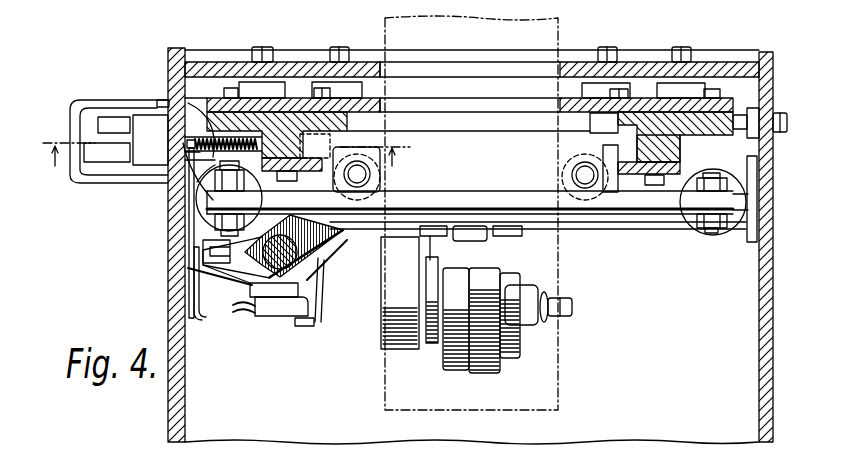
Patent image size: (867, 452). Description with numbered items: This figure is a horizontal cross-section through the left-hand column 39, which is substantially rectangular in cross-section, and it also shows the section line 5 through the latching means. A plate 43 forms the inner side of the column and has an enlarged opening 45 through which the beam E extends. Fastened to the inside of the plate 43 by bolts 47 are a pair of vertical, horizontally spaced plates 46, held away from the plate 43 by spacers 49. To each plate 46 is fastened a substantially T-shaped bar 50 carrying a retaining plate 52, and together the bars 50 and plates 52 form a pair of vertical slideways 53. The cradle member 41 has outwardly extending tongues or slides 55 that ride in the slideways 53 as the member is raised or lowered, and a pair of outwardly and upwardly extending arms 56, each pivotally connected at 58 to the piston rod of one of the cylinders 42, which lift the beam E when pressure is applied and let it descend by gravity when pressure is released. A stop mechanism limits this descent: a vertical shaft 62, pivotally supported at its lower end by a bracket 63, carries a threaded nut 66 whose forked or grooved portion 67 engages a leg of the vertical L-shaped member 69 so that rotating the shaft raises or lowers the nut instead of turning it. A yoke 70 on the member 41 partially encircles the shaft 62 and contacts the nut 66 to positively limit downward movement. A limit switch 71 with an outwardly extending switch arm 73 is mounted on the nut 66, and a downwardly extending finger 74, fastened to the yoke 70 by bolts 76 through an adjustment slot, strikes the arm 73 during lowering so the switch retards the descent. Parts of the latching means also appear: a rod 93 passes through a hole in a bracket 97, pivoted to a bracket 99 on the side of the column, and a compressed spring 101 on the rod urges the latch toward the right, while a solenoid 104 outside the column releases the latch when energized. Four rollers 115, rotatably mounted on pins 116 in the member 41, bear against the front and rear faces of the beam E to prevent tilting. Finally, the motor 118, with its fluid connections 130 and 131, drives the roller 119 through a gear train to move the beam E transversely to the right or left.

The column 39 is at (786, 318).
The cradle member 41 is at (520, 165).
The cylinders 42 is at (203, 196).
The plate 43 is at (302, 70).
The enlarged opening 45 is at (381, 71).
The vertical plates 46 is at (205, 98).
The bolts 47 is at (257, 47).
The spacers 49 is at (252, 86).
The bar 50 is at (348, 120).
The retaining plate 52 is at (300, 162).
The vertical slideways 53 is at (640, 148).
The tongues or slides 55 is at (322, 146).
The arms 56 is at (340, 233).
The pivotal connection 58 is at (222, 217).
The vertical shaft 62 is at (297, 268).
The bracket 63 is at (212, 286).
The nut 66 is at (237, 259).
The forked or grooved portion 67 is at (193, 273).
The L-shaped member 69 is at (201, 249).
The yoke 70 is at (307, 281).
The limit switch 71 is at (276, 306).
The switch arm 73 is at (300, 322).
The finger 74 is at (320, 311).
The bolts 76 is at (382, 257).
The rod 93 is at (200, 184).
The bracket 97 is at (218, 149).
The bracket 99 is at (195, 142).
The compressed spring 101 is at (200, 140).
The solenoid 104 is at (112, 122).
The rollers 115 is at (322, 146).
The pins 116 is at (359, 176).
The motor 118 is at (463, 384).
The roller 119 is at (480, 240).
The fluid connection 130 is at (558, 297).
The fluid connection 131 is at (571, 315).
The section line 5— 5 is at (226, 166).
The beam E is at (552, 349).